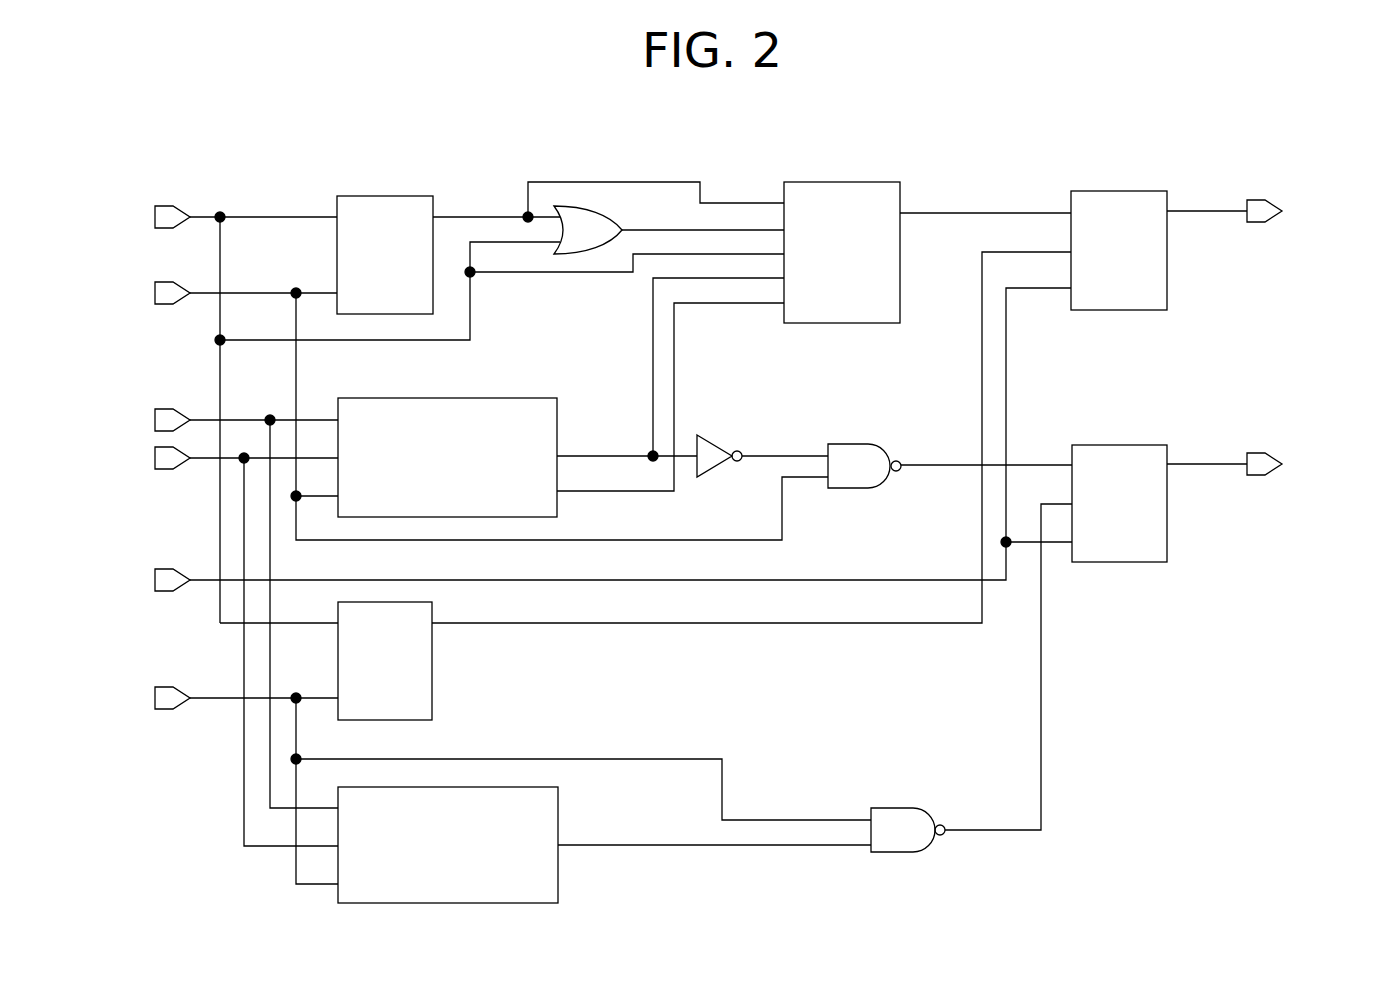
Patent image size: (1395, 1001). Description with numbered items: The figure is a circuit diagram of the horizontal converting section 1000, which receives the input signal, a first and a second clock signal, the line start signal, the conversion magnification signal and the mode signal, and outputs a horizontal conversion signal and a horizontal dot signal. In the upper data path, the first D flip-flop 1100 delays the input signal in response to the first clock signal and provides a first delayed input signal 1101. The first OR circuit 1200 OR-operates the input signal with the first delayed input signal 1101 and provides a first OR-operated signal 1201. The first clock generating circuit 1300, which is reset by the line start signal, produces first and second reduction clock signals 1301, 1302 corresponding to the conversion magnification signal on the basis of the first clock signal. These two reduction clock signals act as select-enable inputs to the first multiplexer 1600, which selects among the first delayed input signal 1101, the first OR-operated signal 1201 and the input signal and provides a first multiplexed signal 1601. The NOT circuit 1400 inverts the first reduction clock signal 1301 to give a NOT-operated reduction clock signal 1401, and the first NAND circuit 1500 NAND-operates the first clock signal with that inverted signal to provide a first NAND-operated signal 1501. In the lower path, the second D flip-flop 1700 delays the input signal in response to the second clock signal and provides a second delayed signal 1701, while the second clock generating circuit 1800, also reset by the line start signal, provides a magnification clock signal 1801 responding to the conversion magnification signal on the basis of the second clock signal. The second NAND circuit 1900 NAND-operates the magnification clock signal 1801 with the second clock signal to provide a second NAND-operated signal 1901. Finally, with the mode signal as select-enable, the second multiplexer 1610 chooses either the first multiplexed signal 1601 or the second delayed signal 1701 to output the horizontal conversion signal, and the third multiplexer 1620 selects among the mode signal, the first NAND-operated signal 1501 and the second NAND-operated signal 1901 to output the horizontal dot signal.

The horizontal converting section 1000 is at (258, 123).
The first D flip-flop 1100 is at (385, 196).
The first delayed input signal 1101 is at (608, 202).
The first OR circuit 1200 is at (580, 207).
The first OR-operated signal 1201 is at (702, 213).
The first clock generating circuit 1300 is at (522, 398).
The first reduction clock signal 1301 is at (670, 369).
The second reduction clock signal 1302 is at (670, 414).
The NOT circuit 1400 is at (715, 435).
The NOT-operated reduction clock signal 1401 is at (785, 439).
The first NAND circuit 1500 is at (847, 444).
The first NAND-operated signal 1501 is at (985, 450).
The first multiplexer 1600 is at (843, 182).
The first multiplexed signal 1601 is at (985, 200).
The second multiplexer 1610 is at (1118, 191).
The third multiplexer 1620 is at (1118, 445).
The second D flip-flop 1700 is at (432, 670).
The second delayed signal 1701 is at (751, 437).
The second clock generating circuit 1800 is at (558, 882).
The magnification clock signal 1801 is at (714, 828).
The second NAND circuit 1900 is at (890, 808).
The second NAND-operated signal 1901 is at (1008, 667).